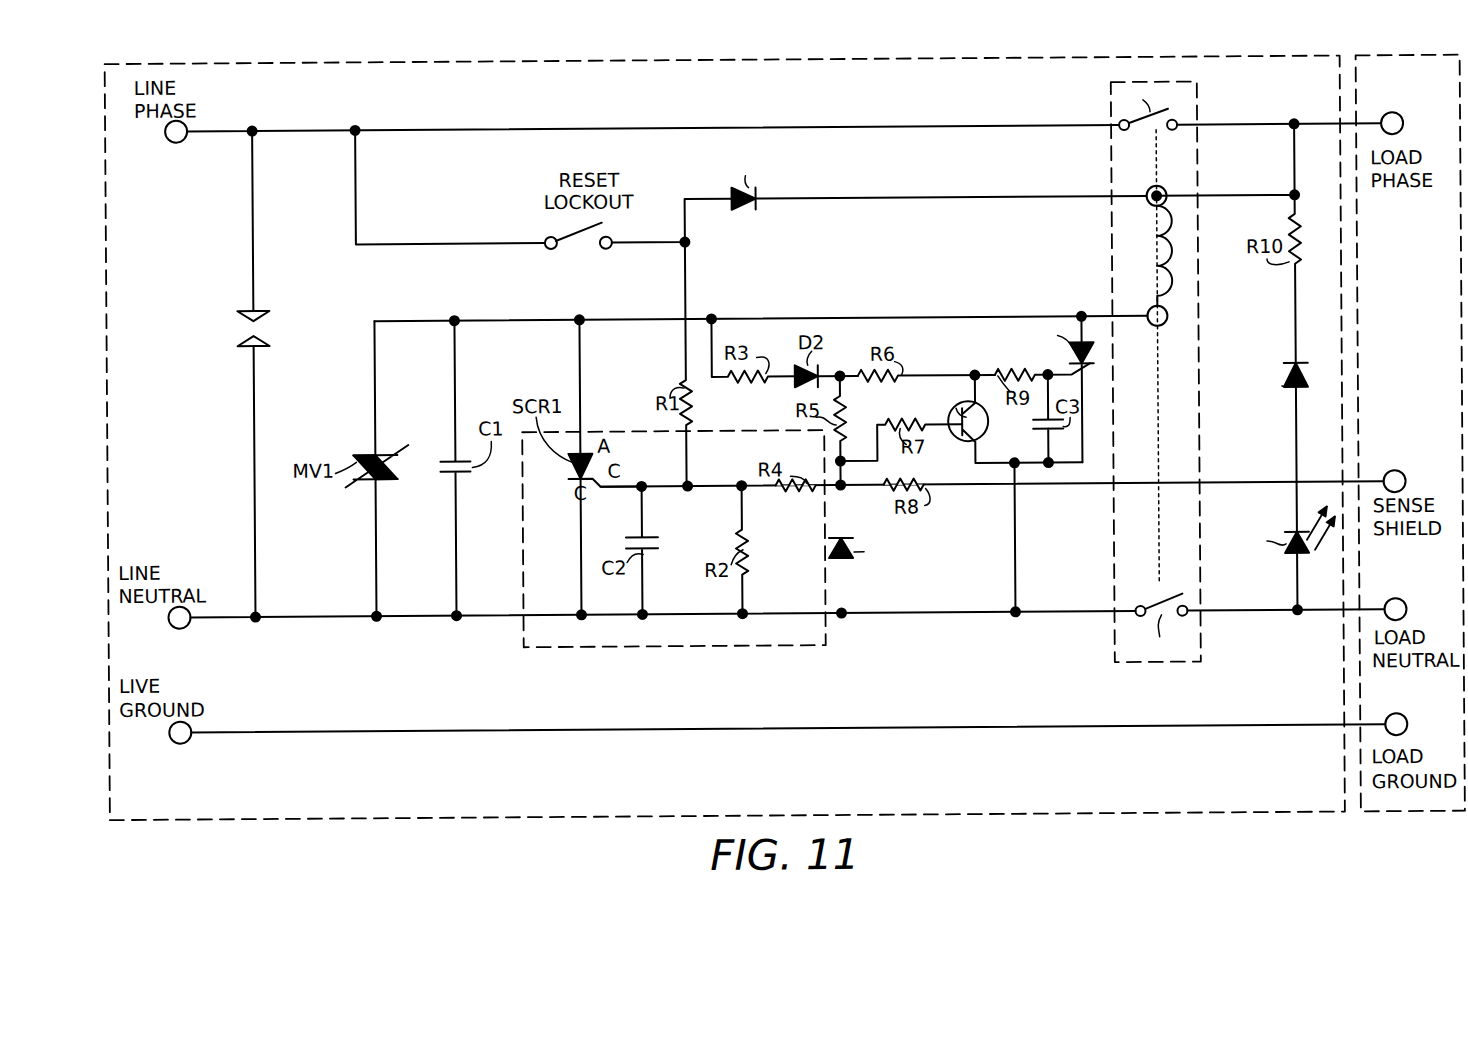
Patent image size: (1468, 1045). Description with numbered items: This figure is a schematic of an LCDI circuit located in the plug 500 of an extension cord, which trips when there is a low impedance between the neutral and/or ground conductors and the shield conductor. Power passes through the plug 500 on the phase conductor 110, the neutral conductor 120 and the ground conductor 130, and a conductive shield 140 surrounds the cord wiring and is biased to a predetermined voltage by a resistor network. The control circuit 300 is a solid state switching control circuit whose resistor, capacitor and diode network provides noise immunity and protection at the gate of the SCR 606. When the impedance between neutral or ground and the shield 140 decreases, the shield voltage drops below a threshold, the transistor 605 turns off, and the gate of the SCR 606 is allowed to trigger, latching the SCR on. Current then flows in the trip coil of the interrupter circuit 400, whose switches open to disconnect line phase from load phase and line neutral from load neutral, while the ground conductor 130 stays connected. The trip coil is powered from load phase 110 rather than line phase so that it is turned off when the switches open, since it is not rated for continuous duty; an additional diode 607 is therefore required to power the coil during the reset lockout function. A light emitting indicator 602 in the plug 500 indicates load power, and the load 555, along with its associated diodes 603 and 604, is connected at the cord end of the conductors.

The phase conductor 110 is at (272, 127).
The neutral conductor 120 is at (305, 615).
The ground conductor 130 is at (290, 730).
The conductive shield 140 is at (1270, 486).
The control circuit 300 is at (566, 648).
The interrupter circuit 400 is at (1112, 85).
The plug 500 is at (1000, 60).
The load 555 is at (1418, 58).
The LED indicator 602 is at (1302, 562).
The diode D4 603 is at (1284, 367).
The diode D3 604 is at (851, 562).
The transistor 605 is at (966, 449).
The SCR 606 is at (1092, 356).
The diode 607 is at (758, 205).